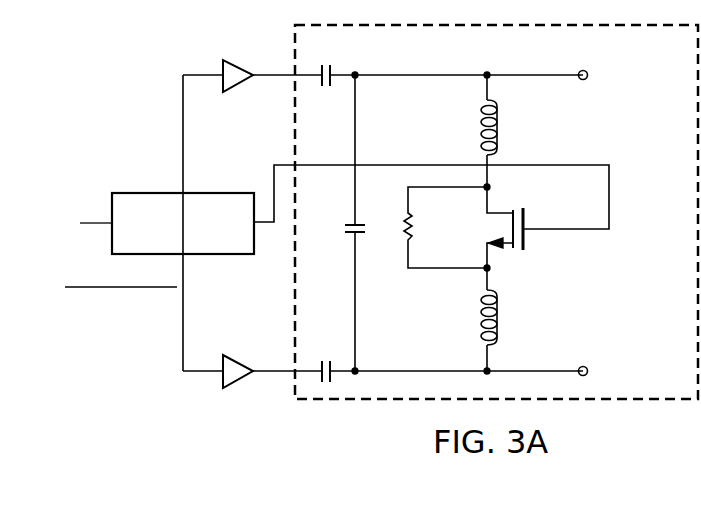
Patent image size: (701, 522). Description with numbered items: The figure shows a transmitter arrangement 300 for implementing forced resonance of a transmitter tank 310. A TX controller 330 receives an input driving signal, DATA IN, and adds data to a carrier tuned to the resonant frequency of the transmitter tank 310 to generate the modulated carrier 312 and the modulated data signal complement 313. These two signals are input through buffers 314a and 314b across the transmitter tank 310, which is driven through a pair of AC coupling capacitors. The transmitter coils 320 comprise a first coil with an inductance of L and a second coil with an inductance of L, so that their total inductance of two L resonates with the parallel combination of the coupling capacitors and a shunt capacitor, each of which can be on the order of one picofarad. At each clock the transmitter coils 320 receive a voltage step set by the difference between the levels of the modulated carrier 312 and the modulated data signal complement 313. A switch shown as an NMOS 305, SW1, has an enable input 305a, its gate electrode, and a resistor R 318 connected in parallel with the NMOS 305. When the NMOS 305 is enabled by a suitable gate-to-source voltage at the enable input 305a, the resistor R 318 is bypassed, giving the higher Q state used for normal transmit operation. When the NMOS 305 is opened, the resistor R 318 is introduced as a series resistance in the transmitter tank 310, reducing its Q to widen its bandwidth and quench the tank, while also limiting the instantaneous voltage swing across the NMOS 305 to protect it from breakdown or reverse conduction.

The transmitter arrangement 300 is at (195, 56).
The transmitter tank 310 is at (290, 127).
The modulated carrier 312 is at (183, 98).
The modulated data signal complement 313 is at (183, 347).
The buffer 314a is at (258, 46).
The buffer 314b is at (258, 344).
The TX controller 330 is at (215, 192).
The transmitter coils 320 is at (497, 117).
The resistor R 318 is at (410, 228).
The NMOS 305 is at (546, 248).
The enable input 305a is at (525, 215).